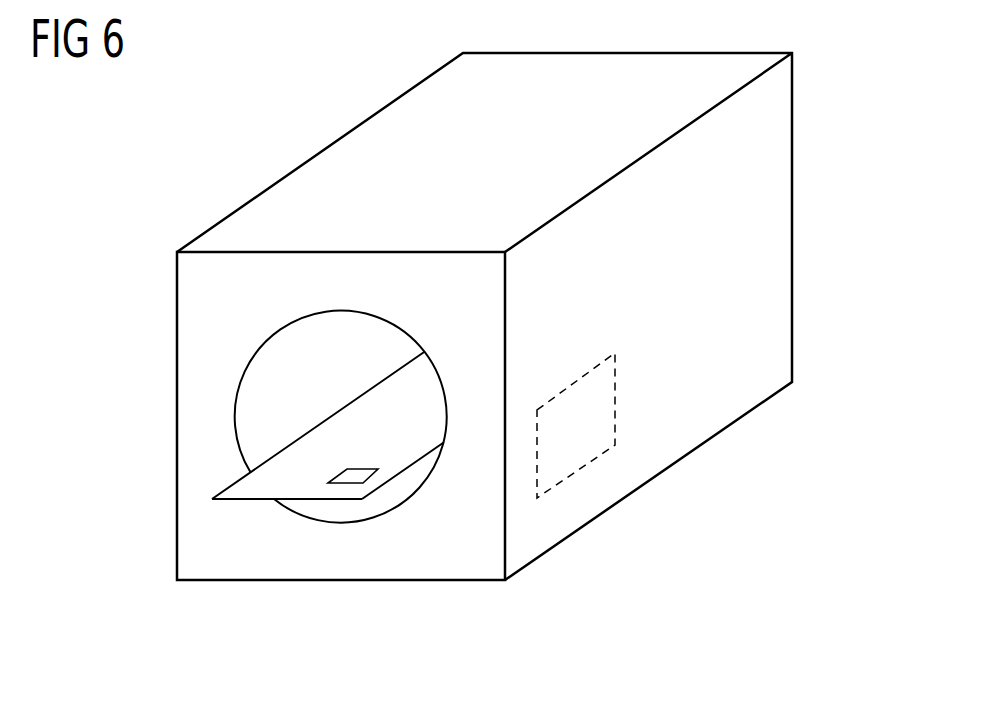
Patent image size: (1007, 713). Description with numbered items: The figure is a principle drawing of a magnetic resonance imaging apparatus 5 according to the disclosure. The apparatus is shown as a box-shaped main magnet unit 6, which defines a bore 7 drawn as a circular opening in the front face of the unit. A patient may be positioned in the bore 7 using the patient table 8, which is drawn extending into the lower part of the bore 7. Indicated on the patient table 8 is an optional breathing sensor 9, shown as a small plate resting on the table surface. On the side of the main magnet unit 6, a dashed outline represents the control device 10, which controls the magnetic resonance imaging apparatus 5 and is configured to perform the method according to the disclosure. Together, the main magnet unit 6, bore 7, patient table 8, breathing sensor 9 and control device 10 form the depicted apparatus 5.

The magnetic resonance imaging apparatus 5 is at (847, 122).
The main magnet unit 6 is at (313, 175).
The bore 7 is at (270, 396).
The patient table 8 is at (255, 487).
The breathing sensor 9 is at (350, 480).
The control device 10 is at (572, 458).